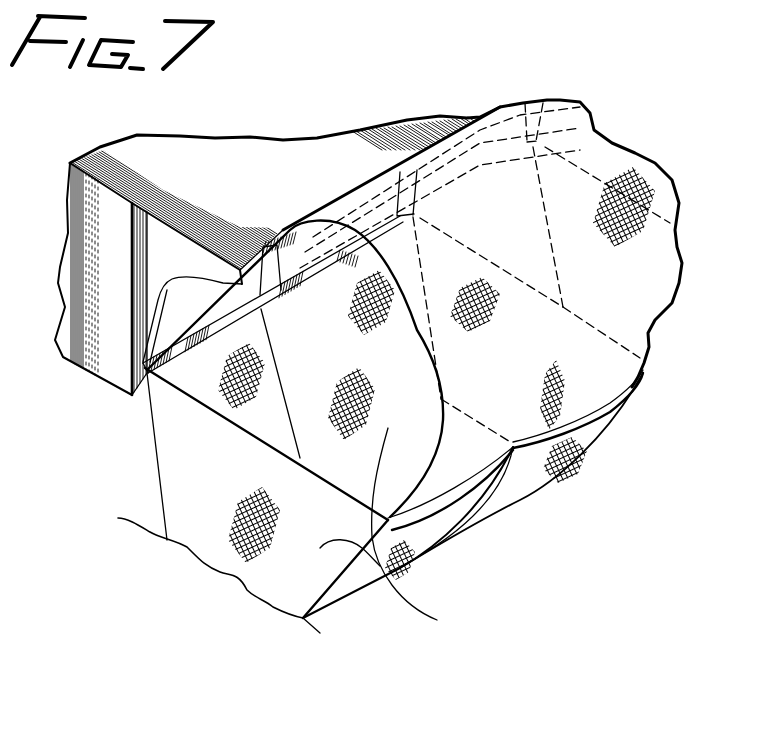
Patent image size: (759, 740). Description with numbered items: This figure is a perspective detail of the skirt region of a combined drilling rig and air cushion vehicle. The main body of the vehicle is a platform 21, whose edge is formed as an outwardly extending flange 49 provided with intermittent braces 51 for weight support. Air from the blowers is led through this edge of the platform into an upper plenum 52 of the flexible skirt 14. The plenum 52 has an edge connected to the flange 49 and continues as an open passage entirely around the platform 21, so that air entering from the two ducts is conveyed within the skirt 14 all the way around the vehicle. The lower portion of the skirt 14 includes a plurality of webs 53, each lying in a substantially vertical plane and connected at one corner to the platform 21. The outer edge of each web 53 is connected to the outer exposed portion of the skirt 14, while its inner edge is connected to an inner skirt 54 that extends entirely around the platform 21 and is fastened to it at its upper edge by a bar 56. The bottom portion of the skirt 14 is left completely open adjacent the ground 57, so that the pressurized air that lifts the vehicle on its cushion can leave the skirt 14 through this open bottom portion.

The flexible skirt 14 is at (550, 493).
The platform 21 is at (92, 374).
The outwardly extending flange 49 is at (170, 212).
The intermittent braces 51 is at (168, 288).
The upper plenum 52 is at (307, 217).
The web 53 is at (437, 620).
The inner skirt 54 is at (286, 428).
The bar 56 is at (273, 330).
The ground 57 is at (136, 523).